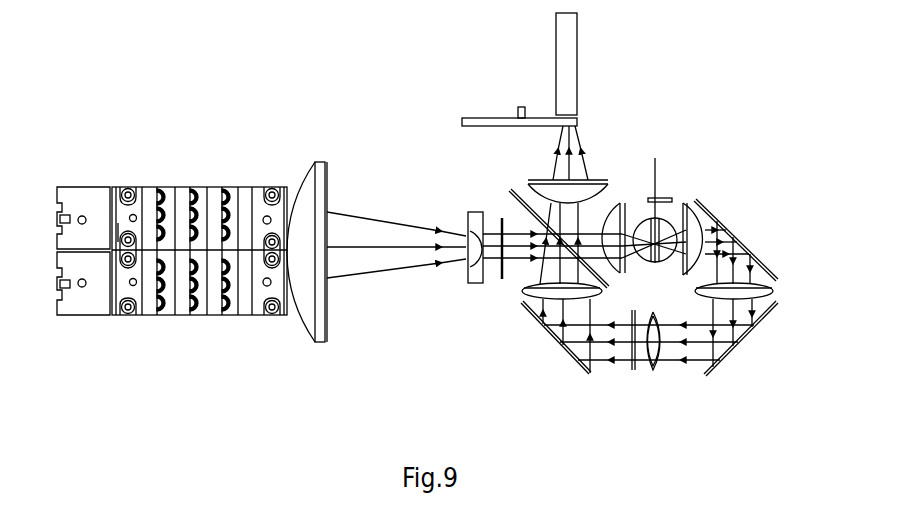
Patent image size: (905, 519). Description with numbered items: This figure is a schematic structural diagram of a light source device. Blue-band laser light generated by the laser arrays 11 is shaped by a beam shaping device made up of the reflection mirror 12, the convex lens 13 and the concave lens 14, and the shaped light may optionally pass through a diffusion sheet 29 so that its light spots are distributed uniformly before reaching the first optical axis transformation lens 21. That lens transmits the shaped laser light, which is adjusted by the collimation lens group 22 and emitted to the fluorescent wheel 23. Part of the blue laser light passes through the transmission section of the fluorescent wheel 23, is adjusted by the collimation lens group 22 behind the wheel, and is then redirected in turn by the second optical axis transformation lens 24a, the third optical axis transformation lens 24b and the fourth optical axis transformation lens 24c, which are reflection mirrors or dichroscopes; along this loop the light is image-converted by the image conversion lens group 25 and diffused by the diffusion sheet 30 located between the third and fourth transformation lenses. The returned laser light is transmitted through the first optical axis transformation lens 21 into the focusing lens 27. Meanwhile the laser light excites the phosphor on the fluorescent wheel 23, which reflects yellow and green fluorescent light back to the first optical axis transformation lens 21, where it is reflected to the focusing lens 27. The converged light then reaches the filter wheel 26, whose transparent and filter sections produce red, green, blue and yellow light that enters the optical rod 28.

The laser arrays 11 is at (87, 197).
The reflection mirror 12 is at (212, 203).
The convex lens 13 is at (320, 197).
The concave lens 14 is at (467, 233).
The diffusion sheet 29 is at (501, 280).
The filter wheel 26 is at (515, 122).
The optical rod 28 is at (573, 95).
The first optical axis transformation lens 21 is at (512, 190).
The focusing lens 27 is at (565, 197).
The collimation lens group 22 is at (620, 212).
The fluorescent wheel 23 is at (660, 200).
The second optical axis transformation lens 24a is at (768, 267).
The third optical axis transformation lens 24b is at (730, 345).
The fourth optical axis transformation lens 24c is at (558, 338).
The diffusion sheet 30 is at (633, 370).
The image conversion lens group 25 is at (730, 298).